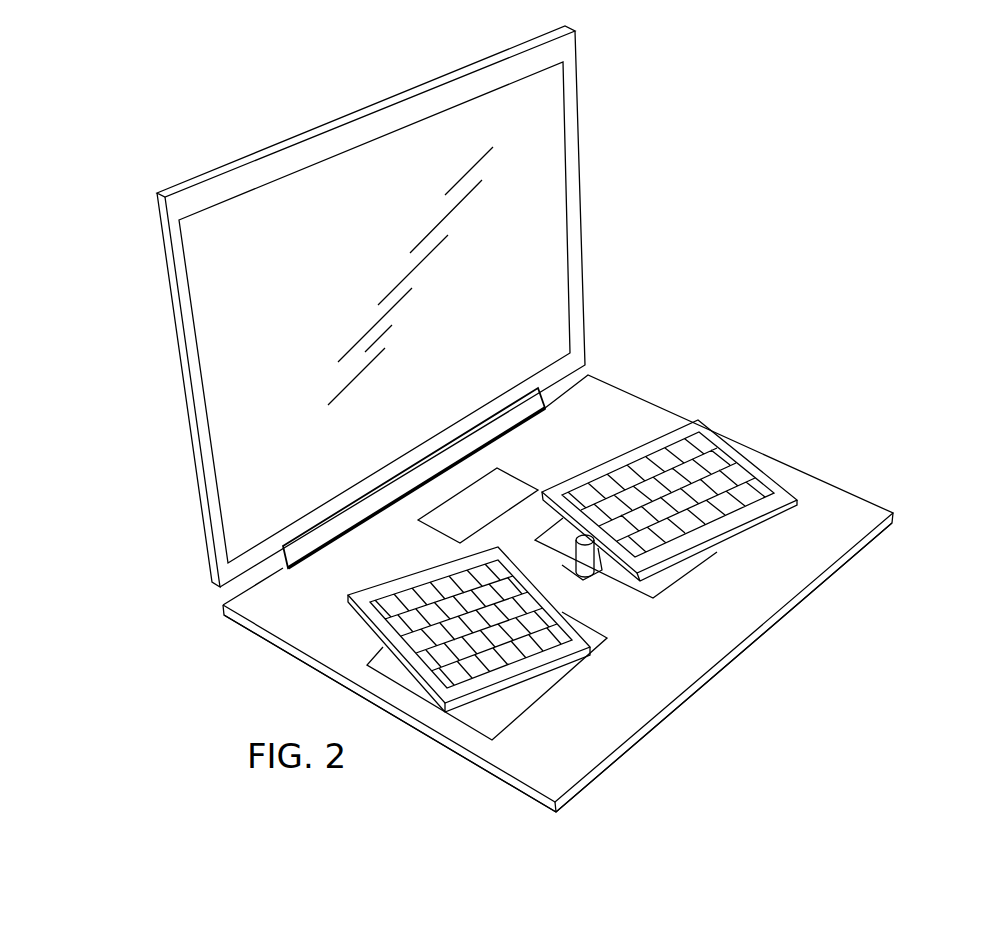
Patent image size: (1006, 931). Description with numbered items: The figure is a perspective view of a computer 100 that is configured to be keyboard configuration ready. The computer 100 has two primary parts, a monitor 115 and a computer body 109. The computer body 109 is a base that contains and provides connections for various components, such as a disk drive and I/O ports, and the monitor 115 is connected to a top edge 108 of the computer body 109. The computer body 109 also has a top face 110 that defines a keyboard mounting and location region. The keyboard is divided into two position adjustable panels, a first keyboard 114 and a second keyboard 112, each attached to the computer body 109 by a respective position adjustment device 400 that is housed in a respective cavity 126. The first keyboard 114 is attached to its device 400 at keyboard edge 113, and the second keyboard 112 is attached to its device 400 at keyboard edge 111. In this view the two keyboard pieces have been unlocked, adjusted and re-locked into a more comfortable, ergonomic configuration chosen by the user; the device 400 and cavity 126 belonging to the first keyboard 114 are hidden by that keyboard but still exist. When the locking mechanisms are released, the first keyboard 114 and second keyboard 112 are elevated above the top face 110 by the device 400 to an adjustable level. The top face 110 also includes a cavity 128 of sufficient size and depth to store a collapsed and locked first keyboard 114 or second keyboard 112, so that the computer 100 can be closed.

The computer 100 is at (856, 141).
The top edge 108 is at (250, 585).
The computer body 109 is at (578, 811).
The top face 110 is at (843, 517).
The keyboard edge 111 is at (538, 493).
The second keyboard 112 is at (678, 437).
The keyboard edge 113 is at (515, 560).
The first keyboard 114 is at (377, 593).
The monitor 115 is at (533, 180).
The cavity 128 is at (493, 715).
The device 400 is at (727, 606).
The cavity 126 is at (602, 584).